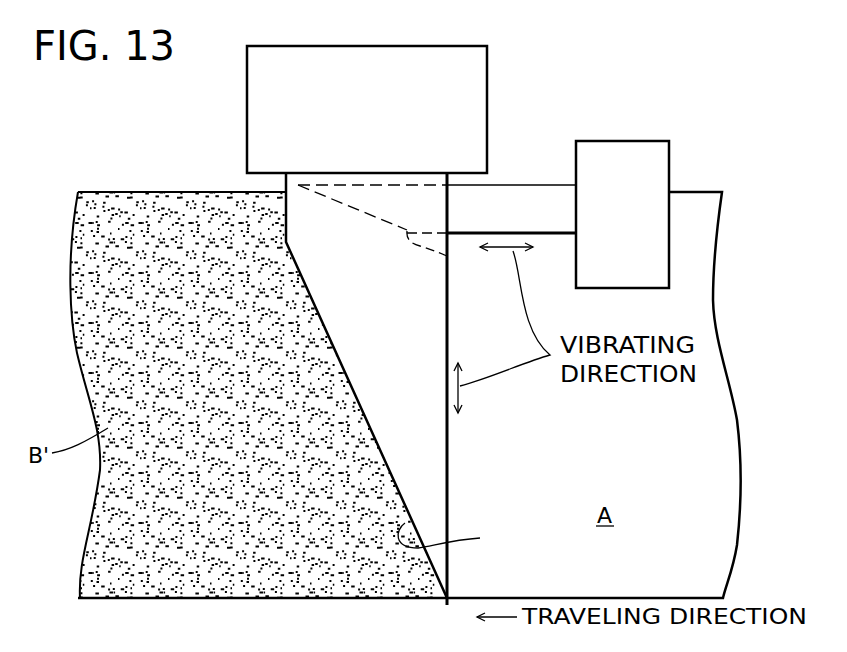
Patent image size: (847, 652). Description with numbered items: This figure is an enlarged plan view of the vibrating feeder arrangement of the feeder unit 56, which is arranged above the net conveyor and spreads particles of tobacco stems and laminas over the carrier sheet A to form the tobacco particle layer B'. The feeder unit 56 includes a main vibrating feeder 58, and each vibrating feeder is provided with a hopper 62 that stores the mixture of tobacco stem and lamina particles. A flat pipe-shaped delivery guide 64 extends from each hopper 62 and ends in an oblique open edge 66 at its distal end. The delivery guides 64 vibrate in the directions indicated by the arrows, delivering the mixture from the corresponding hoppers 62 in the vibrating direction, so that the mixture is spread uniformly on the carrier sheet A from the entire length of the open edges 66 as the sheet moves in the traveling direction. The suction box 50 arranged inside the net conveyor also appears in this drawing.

The suction box 50 is at (667, 125).
The feeder unit 56 is at (595, 75).
The main vibrating feeder 58 is at (229, 159).
The hopper 62 is at (487, 74).
The delivery guide 64 is at (522, 185).
The oblique open edge 66 is at (447, 256).